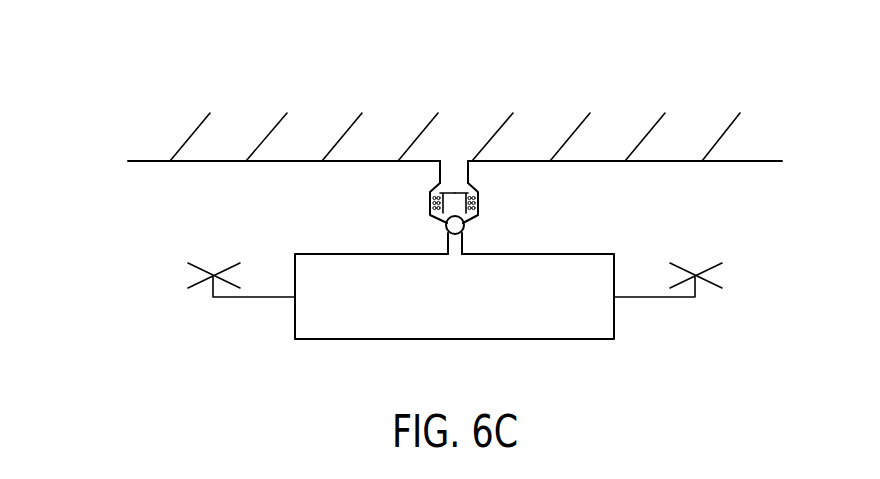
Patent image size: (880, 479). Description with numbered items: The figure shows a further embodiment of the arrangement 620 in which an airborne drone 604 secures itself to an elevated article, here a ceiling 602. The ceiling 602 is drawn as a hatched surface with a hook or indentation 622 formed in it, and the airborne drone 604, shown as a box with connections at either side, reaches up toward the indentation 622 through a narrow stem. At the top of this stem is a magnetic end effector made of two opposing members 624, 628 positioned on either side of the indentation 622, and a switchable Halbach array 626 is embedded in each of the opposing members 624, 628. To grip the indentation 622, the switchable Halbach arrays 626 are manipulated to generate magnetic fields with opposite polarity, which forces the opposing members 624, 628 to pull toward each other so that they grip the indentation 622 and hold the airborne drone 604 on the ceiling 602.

The valve assembly 620 is at (417, 227).
The ceiling 602 is at (312, 150).
The indentation 622 is at (455, 170).
The switchable Halbach array 626 is at (425, 203).
The opposing member 628 is at (423, 214).
The opposing member 624 is at (487, 214).
The airborne drone 604 is at (457, 320).